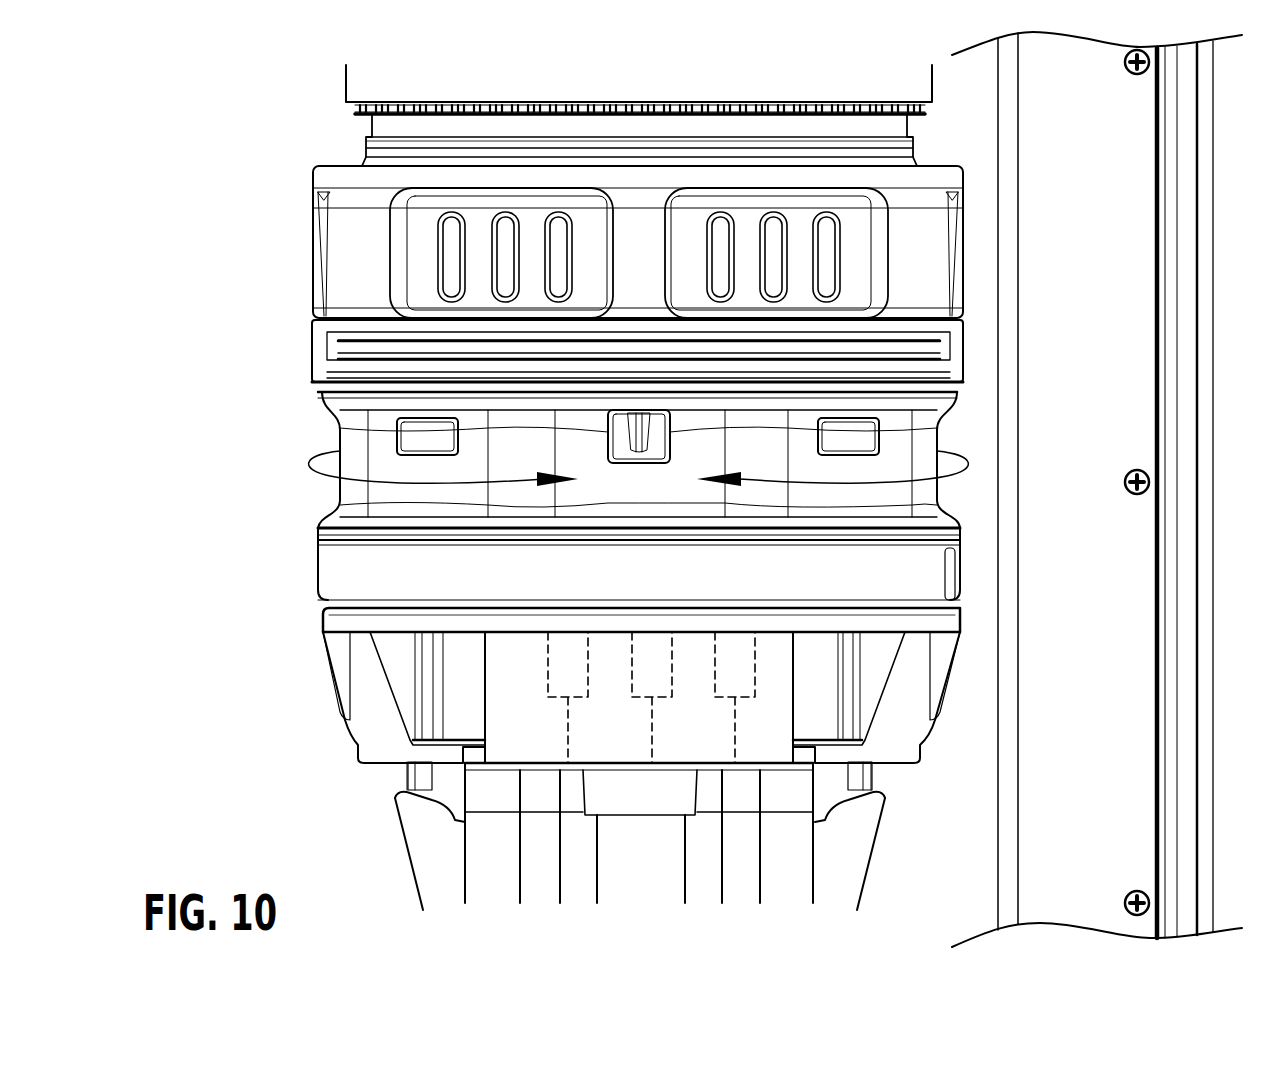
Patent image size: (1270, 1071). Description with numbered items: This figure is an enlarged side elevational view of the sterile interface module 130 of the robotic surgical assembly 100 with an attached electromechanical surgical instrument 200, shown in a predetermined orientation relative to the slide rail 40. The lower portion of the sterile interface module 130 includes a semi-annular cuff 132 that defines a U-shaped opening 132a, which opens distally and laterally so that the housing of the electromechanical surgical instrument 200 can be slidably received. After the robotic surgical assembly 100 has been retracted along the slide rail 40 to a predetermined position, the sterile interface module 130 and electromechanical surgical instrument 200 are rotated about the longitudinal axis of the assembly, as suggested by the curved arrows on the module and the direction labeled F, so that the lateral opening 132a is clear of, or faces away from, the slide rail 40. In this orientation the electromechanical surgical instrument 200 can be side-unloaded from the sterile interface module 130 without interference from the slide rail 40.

The slide rail 40 is at (1130, 590).
The robotic surgical assembly 100 is at (945, 484).
The sterile interface module 130 is at (306, 535).
The semi-annular cuff 132 is at (350, 670).
The U-shaped opening 132a is at (478, 691).
The electromechanical surgical instrument 200 is at (455, 887).
The force direction F is at (972, 458).